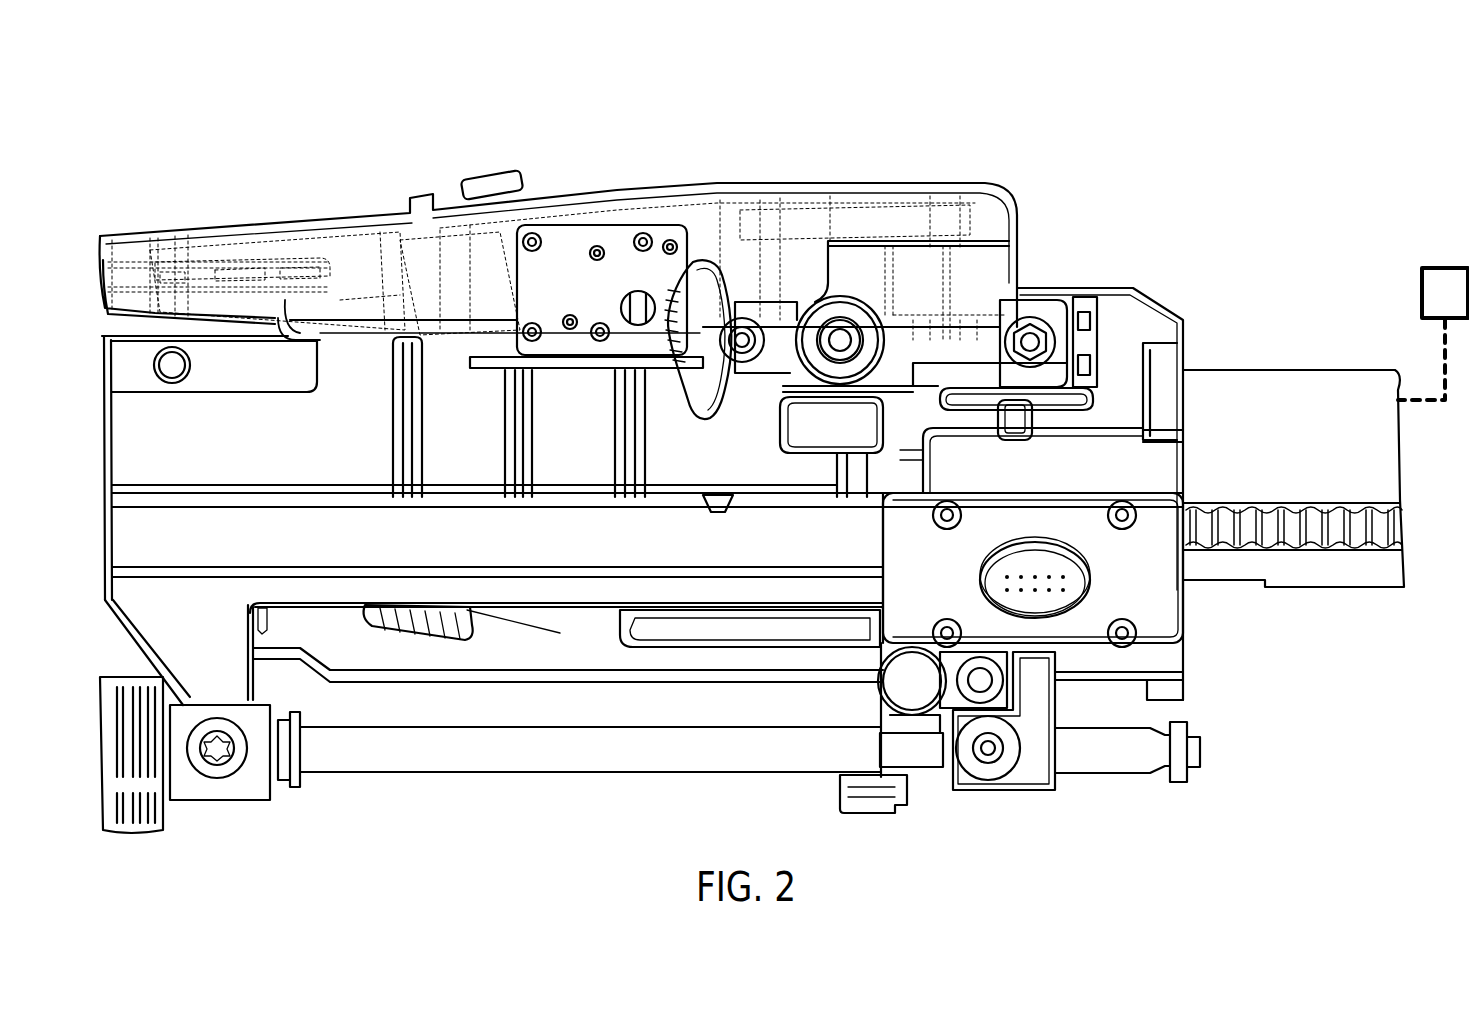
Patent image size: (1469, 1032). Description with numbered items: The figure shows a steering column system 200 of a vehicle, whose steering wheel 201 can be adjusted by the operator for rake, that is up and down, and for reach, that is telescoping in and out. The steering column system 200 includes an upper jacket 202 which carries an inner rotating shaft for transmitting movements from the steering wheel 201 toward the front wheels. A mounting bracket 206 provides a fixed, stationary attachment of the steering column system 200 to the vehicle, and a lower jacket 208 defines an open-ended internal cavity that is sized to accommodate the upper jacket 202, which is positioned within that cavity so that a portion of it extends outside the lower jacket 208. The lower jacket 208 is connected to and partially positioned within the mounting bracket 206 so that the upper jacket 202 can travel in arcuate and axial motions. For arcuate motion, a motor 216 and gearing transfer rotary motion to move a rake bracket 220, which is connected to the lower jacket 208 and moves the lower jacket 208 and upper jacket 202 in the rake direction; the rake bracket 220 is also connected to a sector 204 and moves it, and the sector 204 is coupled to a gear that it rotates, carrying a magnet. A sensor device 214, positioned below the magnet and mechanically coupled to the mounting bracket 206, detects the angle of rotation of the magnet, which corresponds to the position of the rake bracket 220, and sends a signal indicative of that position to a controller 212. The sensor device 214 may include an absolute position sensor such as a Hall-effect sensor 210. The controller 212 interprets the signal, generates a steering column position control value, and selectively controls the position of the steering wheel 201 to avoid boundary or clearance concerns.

The steering column system 200 is at (193, 123).
The steering wheel 201 is at (1440, 262).
The upper jacket 202 is at (1352, 387).
The sector 204 is at (705, 275).
The mounting bracket 206 is at (681, 200).
The lower jacket 208 is at (1145, 325).
The Hall-effect sensor 210 is at (640, 300).
The controller 212 is at (490, 185).
The sensor device 214 is at (557, 225).
The motor 216 is at (400, 262).
The rake bracket 220 is at (990, 270).